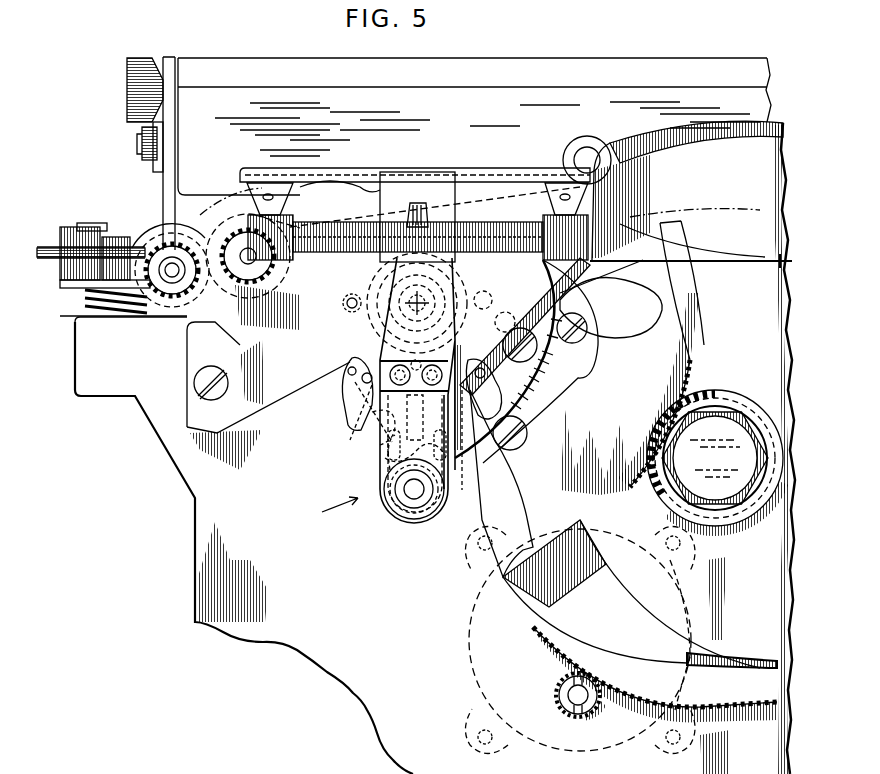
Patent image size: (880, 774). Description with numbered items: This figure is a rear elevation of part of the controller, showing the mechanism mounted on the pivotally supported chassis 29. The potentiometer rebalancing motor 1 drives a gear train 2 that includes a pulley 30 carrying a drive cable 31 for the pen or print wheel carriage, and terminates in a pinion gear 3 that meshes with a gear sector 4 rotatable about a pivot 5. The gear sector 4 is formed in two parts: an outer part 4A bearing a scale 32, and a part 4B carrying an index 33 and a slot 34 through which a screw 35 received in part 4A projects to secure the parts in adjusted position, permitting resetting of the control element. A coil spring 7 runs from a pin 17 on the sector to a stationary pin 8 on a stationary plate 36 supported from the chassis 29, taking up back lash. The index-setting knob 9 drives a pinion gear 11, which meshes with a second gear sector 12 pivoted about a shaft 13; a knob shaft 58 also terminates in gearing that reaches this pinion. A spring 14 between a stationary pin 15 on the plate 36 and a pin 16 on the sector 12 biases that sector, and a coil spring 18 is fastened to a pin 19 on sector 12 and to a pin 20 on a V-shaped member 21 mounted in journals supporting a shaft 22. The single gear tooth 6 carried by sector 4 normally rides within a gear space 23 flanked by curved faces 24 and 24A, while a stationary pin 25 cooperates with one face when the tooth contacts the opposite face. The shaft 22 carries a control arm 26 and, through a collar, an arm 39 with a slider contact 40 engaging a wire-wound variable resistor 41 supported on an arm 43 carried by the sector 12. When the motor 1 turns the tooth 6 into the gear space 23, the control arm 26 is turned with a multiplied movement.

The potentiometer rebalancing motor 1 is at (470, 612).
The gear train 2 is at (568, 695).
The pinion gear 3 is at (698, 395).
The gear sector 4 is at (690, 360).
The outer part of gear sector 4A is at (608, 338).
The gear sector part 4B is at (550, 282).
The pivot 5 is at (378, 318).
The gear tooth 6 is at (421, 390).
The spring 7 is at (378, 297).
The stationary pin 8 is at (388, 327).
The index-setting knob 9 is at (148, 228).
The pinion gear 11 is at (245, 275).
The gear sector 12 is at (270, 295).
The shaft 13 is at (466, 300).
The spring 14 is at (385, 272).
The stationary pin 15 is at (507, 320).
The pin 16 is at (347, 304).
The pin 17 is at (468, 283).
The coil spring 18 is at (388, 512).
The pin 19 is at (382, 443).
The pin 20 is at (452, 478).
The V-shaped member 21 is at (356, 394).
The shaft 22 is at (416, 522).
The gear space 23 is at (382, 460).
The curved face 24 is at (372, 412).
The curved face 24A is at (470, 452).
The stationary pin 25 is at (380, 340).
The control arm 26 is at (328, 511).
The chassis 29 is at (210, 536).
The pulley 30 is at (716, 260).
The drive cable 31 is at (610, 259).
The scale 32 is at (580, 370).
The index 33 is at (528, 372).
The slot 34 is at (526, 330).
The screw 35 is at (518, 362).
The stationary plate 36 is at (262, 403).
The arm 39 is at (385, 478).
The slider contact 40 is at (445, 338).
The variable resistor 41 is at (368, 247).
The arm 43 is at (411, 172).
The shaft 58 is at (170, 275).